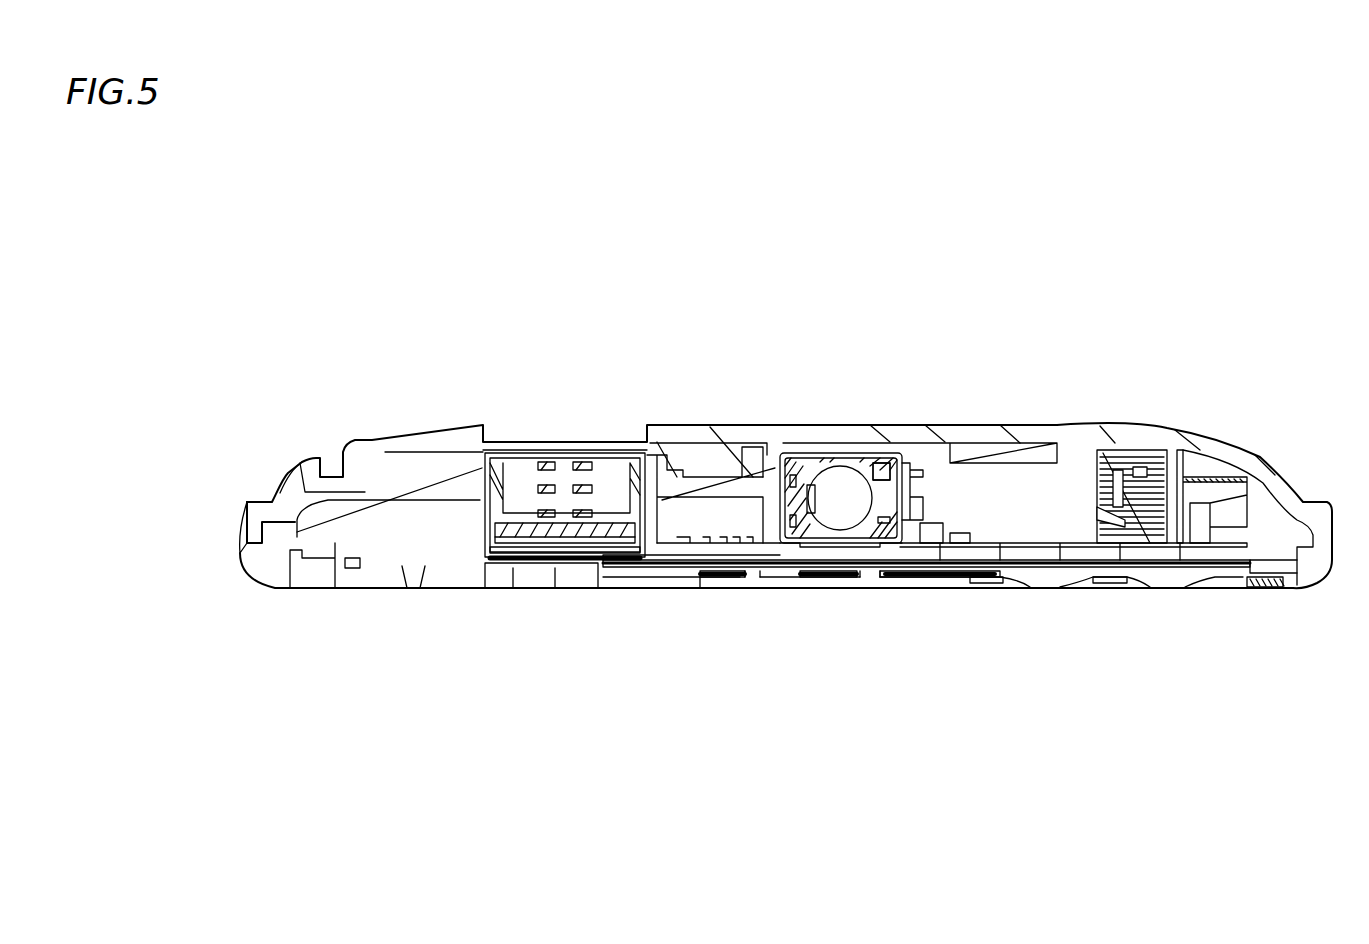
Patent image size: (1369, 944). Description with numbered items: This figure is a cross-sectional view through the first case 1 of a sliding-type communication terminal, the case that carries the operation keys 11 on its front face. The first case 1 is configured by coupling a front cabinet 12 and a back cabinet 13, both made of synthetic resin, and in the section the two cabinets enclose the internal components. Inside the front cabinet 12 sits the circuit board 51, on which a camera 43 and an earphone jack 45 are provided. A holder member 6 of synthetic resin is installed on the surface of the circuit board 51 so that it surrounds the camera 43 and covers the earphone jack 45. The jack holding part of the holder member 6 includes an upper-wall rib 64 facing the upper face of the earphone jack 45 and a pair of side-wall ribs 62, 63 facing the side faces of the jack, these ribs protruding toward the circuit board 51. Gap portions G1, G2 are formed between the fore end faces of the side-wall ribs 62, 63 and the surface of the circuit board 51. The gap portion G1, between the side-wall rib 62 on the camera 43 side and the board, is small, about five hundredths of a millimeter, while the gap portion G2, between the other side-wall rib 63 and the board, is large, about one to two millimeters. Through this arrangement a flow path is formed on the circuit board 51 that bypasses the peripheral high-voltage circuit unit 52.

The first case 1 is at (148, 482).
The operation keys 11 is at (1145, 577).
The front cabinet 12 is at (275, 573).
The back cabinet 13 is at (278, 482).
The camera 43 is at (521, 478).
The earphone jack 45 is at (890, 455).
The holder member 6 is at (935, 453).
The upper-wall rib 64 is at (812, 447).
The circuit board 51 is at (712, 568).
The high-voltage circuit unit 52 is at (953, 530).
The side-wall rib 62 is at (740, 570).
The side-wall rib 63 is at (925, 497).
The gap portion G1 is at (770, 570).
The gap portion G2 is at (890, 575).